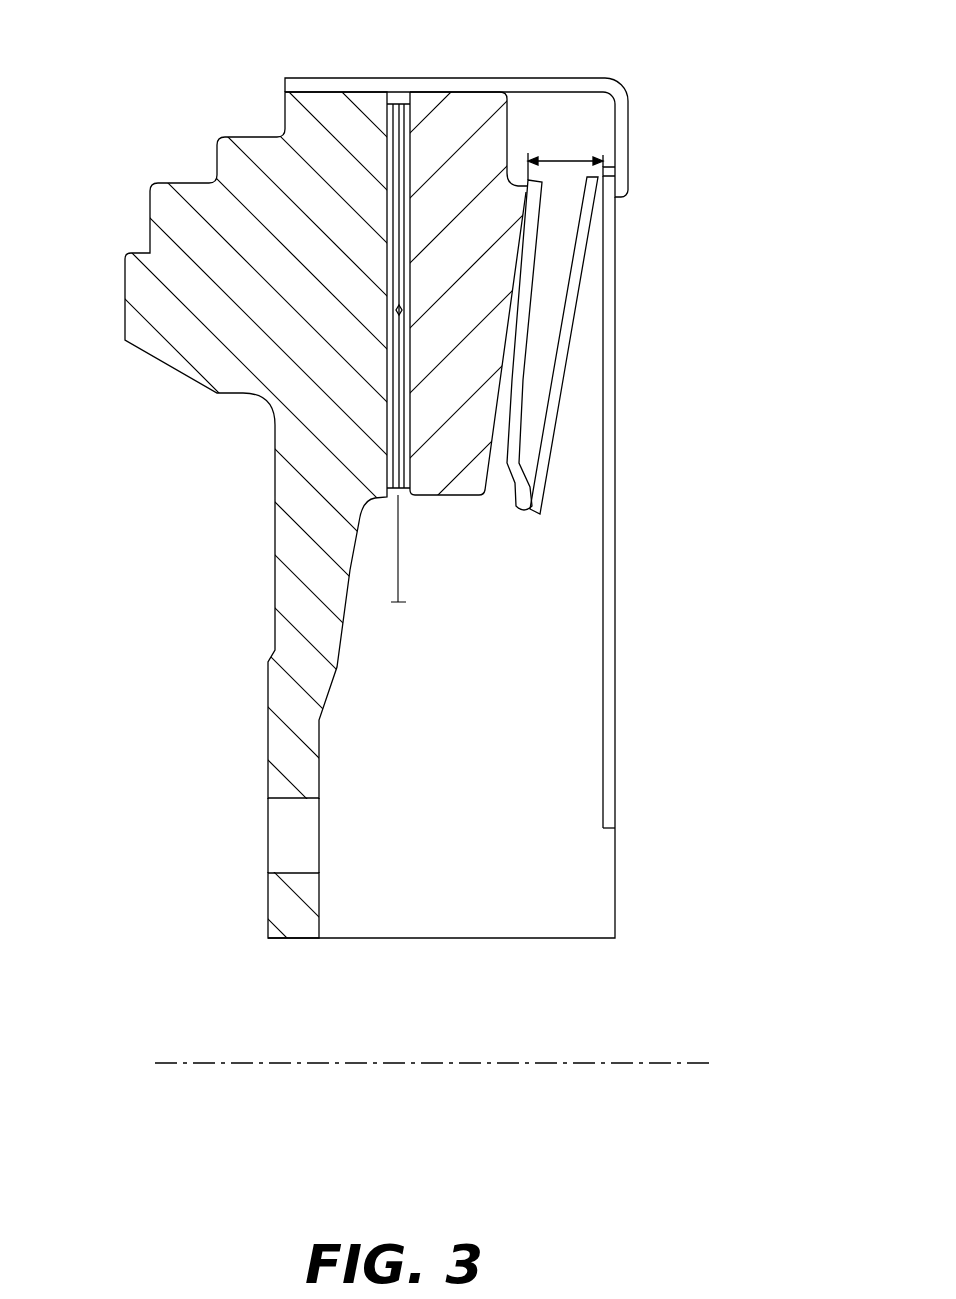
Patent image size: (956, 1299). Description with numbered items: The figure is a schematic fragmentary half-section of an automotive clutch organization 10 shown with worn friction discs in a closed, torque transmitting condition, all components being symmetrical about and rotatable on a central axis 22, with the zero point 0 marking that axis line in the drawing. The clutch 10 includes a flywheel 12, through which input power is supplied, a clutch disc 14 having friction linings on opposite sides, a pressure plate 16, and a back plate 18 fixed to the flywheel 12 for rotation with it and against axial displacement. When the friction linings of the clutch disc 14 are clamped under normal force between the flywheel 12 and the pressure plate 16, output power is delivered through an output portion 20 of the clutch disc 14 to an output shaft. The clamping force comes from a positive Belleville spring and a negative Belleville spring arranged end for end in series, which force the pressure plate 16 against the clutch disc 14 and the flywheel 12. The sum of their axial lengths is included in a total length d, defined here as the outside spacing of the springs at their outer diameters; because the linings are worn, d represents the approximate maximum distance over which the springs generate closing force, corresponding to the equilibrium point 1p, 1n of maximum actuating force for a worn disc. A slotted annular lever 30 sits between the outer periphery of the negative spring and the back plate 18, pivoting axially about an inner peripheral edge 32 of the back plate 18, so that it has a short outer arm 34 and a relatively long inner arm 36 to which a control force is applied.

The automotive clutch organization 10 is at (126, 190).
The flywheel 12 is at (148, 303).
The clutch disc 14 is at (387, 400).
The pressure plate 16 is at (445, 122).
The back plate 18 is at (363, 83).
The output portion 20 is at (397, 580).
The central axis 22 is at (357, 1063).
The slotted annular lever 30 is at (628, 703).
The inner peripheral edge 32 is at (628, 200).
The short outer arm 34 is at (606, 172).
The long inner arm 36 is at (618, 815).
The equilibrium point of positive Belleville spring 1p is at (515, 504).
The equilibrium point of negative Belleville spring 1n is at (542, 520).
The total length d is at (565, 156).
The origin 0 is at (619, 962).